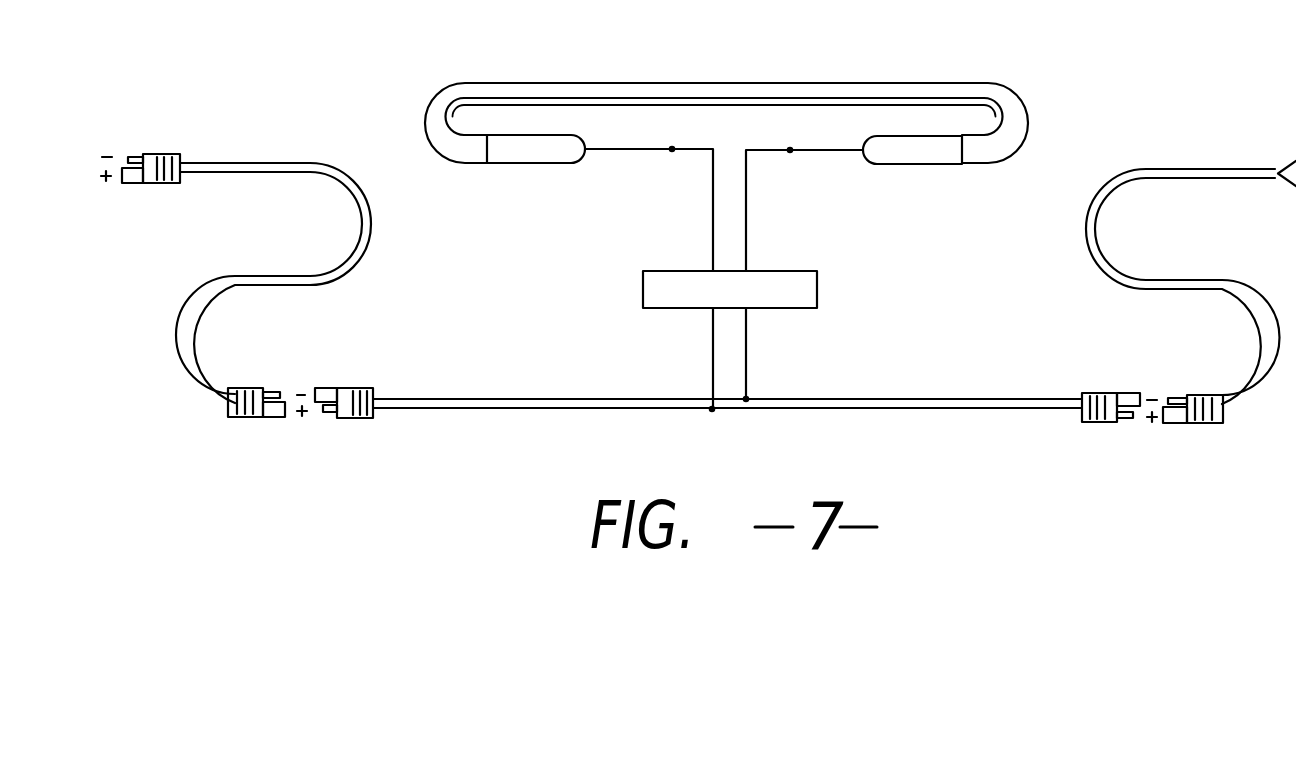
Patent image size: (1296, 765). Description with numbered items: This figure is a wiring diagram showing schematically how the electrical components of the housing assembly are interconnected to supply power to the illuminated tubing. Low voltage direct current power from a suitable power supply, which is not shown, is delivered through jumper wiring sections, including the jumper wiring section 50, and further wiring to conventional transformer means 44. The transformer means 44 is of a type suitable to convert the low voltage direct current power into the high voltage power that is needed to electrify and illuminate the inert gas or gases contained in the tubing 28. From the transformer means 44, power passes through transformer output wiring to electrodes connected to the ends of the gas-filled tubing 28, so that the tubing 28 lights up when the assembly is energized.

The tubing 28 is at (775, 82).
The transformer means 44 is at (817, 295).
The jumper wiring section 50 is at (495, 410).